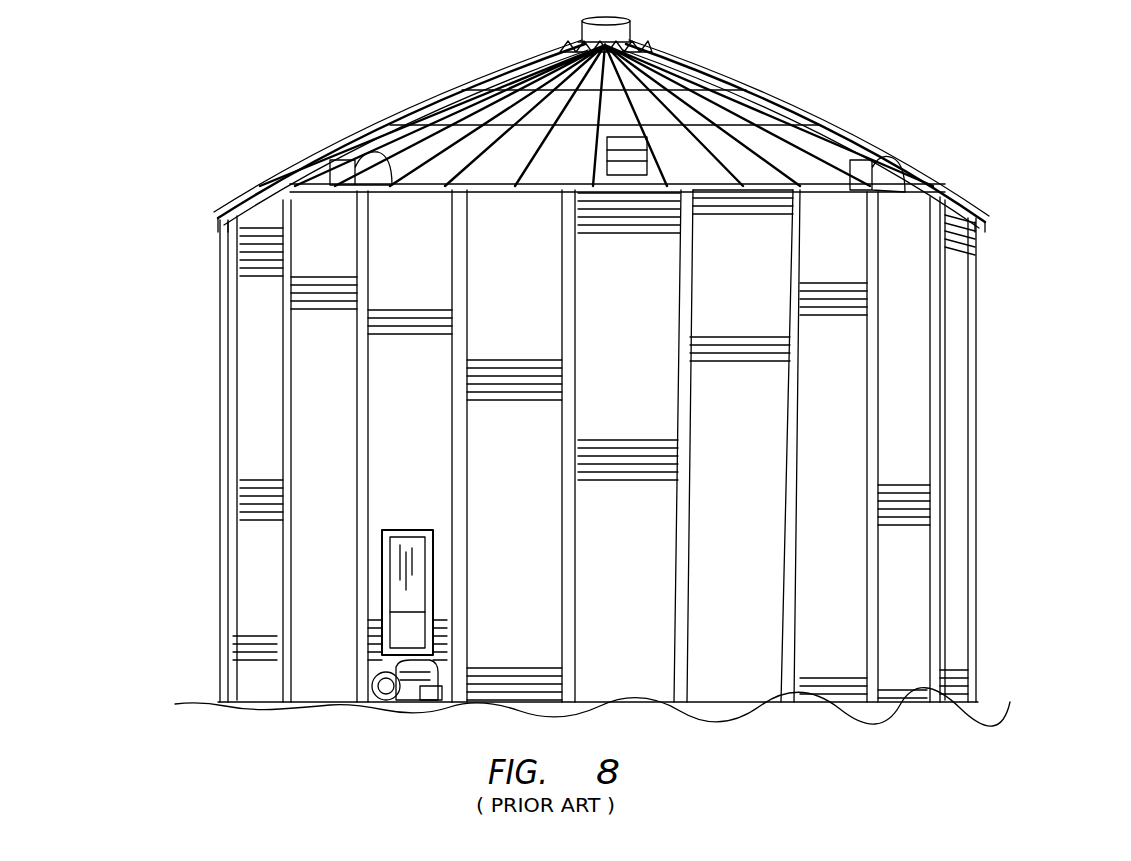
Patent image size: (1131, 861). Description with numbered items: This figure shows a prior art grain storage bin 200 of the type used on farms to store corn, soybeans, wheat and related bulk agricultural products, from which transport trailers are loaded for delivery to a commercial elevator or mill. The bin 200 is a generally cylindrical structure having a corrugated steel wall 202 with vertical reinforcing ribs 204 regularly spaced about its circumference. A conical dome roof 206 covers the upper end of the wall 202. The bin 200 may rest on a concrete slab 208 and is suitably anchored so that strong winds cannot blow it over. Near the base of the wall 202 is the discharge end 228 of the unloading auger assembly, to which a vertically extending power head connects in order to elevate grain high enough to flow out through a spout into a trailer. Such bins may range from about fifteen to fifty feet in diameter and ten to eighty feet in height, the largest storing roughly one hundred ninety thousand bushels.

The storage bin 200 is at (812, 80).
The corrugated steel wall 202 is at (253, 342).
The vertical reinforcing ribs 204 is at (252, 200).
The conical dome roof 206 is at (500, 85).
The concrete slab 208 is at (975, 700).
The discharge end 228 is at (410, 705).